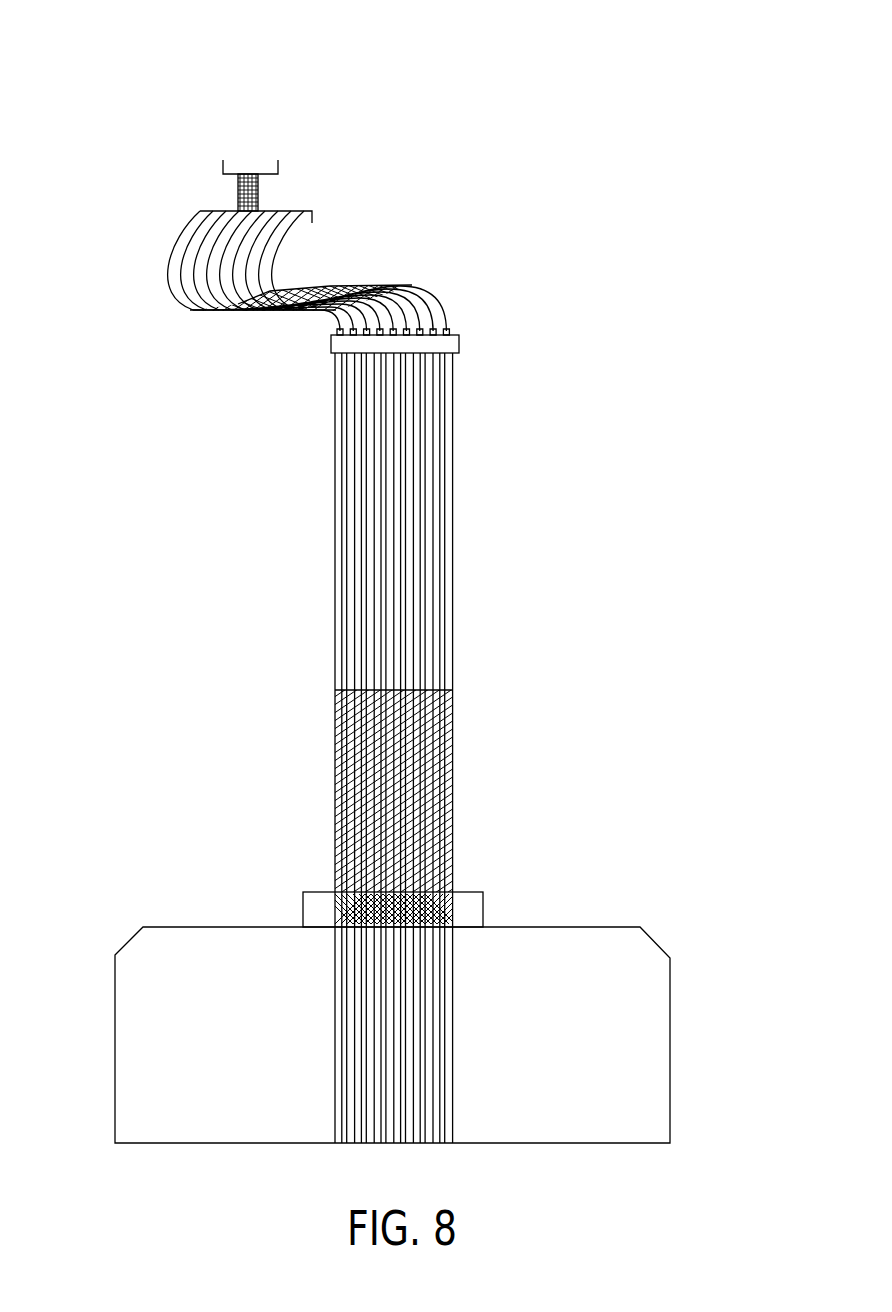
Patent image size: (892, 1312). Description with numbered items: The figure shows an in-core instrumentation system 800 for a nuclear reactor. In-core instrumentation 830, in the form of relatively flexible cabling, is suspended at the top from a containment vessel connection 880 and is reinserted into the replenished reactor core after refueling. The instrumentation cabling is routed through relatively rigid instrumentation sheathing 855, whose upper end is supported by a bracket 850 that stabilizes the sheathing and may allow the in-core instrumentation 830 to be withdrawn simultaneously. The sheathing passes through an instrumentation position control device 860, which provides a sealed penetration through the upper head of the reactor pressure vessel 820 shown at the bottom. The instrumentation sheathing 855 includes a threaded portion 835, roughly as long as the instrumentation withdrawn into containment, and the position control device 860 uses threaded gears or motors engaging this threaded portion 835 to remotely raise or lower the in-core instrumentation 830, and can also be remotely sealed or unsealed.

The in-core instrumentation system 800 is at (652, 148).
The reactor pressure vessel 820 is at (113, 1037).
The in-core instrumentation 830 is at (423, 292).
The threaded portion 835 is at (452, 785).
The bracket 850 is at (460, 345).
The instrumentation sheathing 855 is at (452, 584).
The instrumentation position control device 860 is at (320, 890).
The containment vessel connection 880 is at (223, 165).